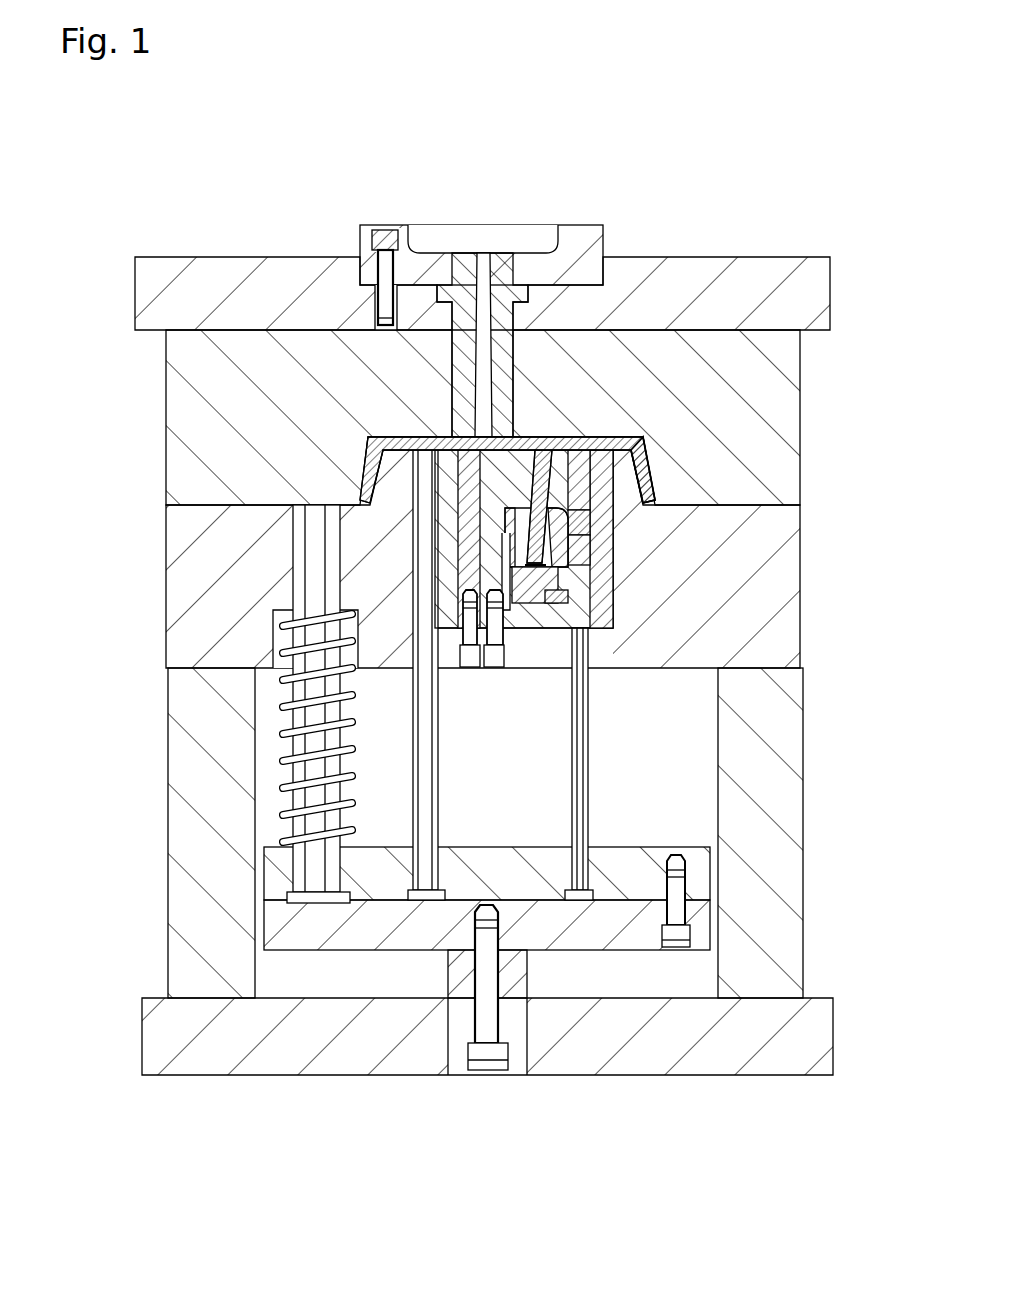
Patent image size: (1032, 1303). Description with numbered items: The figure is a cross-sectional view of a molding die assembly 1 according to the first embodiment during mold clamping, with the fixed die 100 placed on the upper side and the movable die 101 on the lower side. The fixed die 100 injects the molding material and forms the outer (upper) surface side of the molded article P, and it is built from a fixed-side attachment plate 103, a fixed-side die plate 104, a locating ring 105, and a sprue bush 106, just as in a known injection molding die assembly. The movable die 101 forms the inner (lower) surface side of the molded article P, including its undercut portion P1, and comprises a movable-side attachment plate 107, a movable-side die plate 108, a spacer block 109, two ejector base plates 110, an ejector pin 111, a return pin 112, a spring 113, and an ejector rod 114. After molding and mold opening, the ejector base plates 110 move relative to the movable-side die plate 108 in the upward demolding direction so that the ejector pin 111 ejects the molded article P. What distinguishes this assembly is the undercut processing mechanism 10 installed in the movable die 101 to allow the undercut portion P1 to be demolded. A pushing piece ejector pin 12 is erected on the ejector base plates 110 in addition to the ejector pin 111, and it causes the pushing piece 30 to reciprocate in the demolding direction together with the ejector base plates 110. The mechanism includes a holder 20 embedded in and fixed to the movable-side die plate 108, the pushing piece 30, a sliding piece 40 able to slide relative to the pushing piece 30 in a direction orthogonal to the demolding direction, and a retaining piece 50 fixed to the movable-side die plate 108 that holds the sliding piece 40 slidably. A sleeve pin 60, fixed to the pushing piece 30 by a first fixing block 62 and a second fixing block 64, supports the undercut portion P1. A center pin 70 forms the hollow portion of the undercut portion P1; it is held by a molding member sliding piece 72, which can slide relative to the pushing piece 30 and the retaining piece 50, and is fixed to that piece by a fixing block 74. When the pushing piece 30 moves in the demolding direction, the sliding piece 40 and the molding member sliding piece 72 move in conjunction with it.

The molding die assembly 1 is at (485, 165).
The fixed die 100 is at (180, 226).
The movable die 101 is at (183, 1112).
The fixed-side attachment plate 103 is at (806, 278).
The fixed-side die plate 104 is at (762, 354).
The locating ring 105 is at (583, 233).
The sprue bush 106 is at (498, 262).
The movable-side attachment plate 107 is at (300, 1062).
The movable-side die plate 108 is at (196, 645).
The spacer block 109 is at (197, 785).
The ejector base plates 110 is at (308, 932).
The ejector pin 111 is at (420, 745).
The return pin 112 is at (308, 878).
The spring 113 is at (290, 832).
The ejector rod 114 is at (456, 1063).
The undercut processing mechanism 10 is at (685, 541).
The pushing piece ejector pin 12 is at (578, 812).
The holder 20 is at (470, 578).
The pushing piece 30 is at (600, 478).
The sliding piece 40 is at (545, 448).
The retaining piece 50 is at (455, 541).
The sleeve pin 60 is at (600, 500).
The first fixing block 62 is at (590, 520).
The second fixing block 64 is at (580, 545).
The center pin 70 is at (565, 508).
The molding member sliding piece 72 is at (543, 578).
The fixing block 74 is at (556, 558).
The molded article P is at (363, 475).
The undercut portion P1 is at (640, 440).